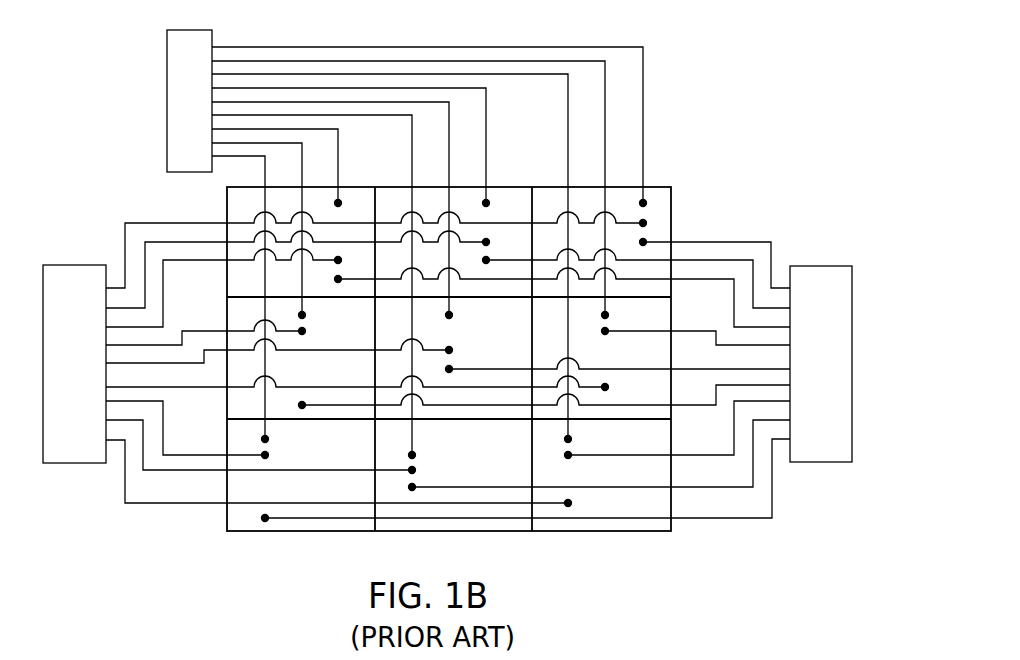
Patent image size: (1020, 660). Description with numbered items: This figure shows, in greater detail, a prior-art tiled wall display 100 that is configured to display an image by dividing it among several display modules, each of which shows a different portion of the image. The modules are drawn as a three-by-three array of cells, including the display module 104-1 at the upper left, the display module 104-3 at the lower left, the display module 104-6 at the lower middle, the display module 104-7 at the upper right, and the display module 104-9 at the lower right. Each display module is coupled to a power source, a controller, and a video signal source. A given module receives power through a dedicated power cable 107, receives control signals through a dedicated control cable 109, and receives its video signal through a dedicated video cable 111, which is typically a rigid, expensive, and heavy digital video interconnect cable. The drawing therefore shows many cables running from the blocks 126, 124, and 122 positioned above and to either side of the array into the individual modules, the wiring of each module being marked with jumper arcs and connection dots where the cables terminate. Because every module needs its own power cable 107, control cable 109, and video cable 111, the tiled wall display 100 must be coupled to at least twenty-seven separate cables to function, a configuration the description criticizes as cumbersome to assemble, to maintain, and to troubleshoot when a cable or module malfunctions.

The tiled wall display 100 is at (749, 139).
The display module 104-1 is at (238, 210).
The display module 104-3 is at (312, 529).
The display module 104-6 is at (485, 526).
The display module 104-7 is at (624, 215).
The display module 104-9 is at (633, 527).
The power cable 107 is at (643, 84).
The control cable 109 is at (645, 222).
The video cable 111 is at (752, 245).
The right driver circuit 122 is at (828, 266).
The left driver circuit 124 is at (72, 265).
The top driver circuit 126 is at (167, 60).